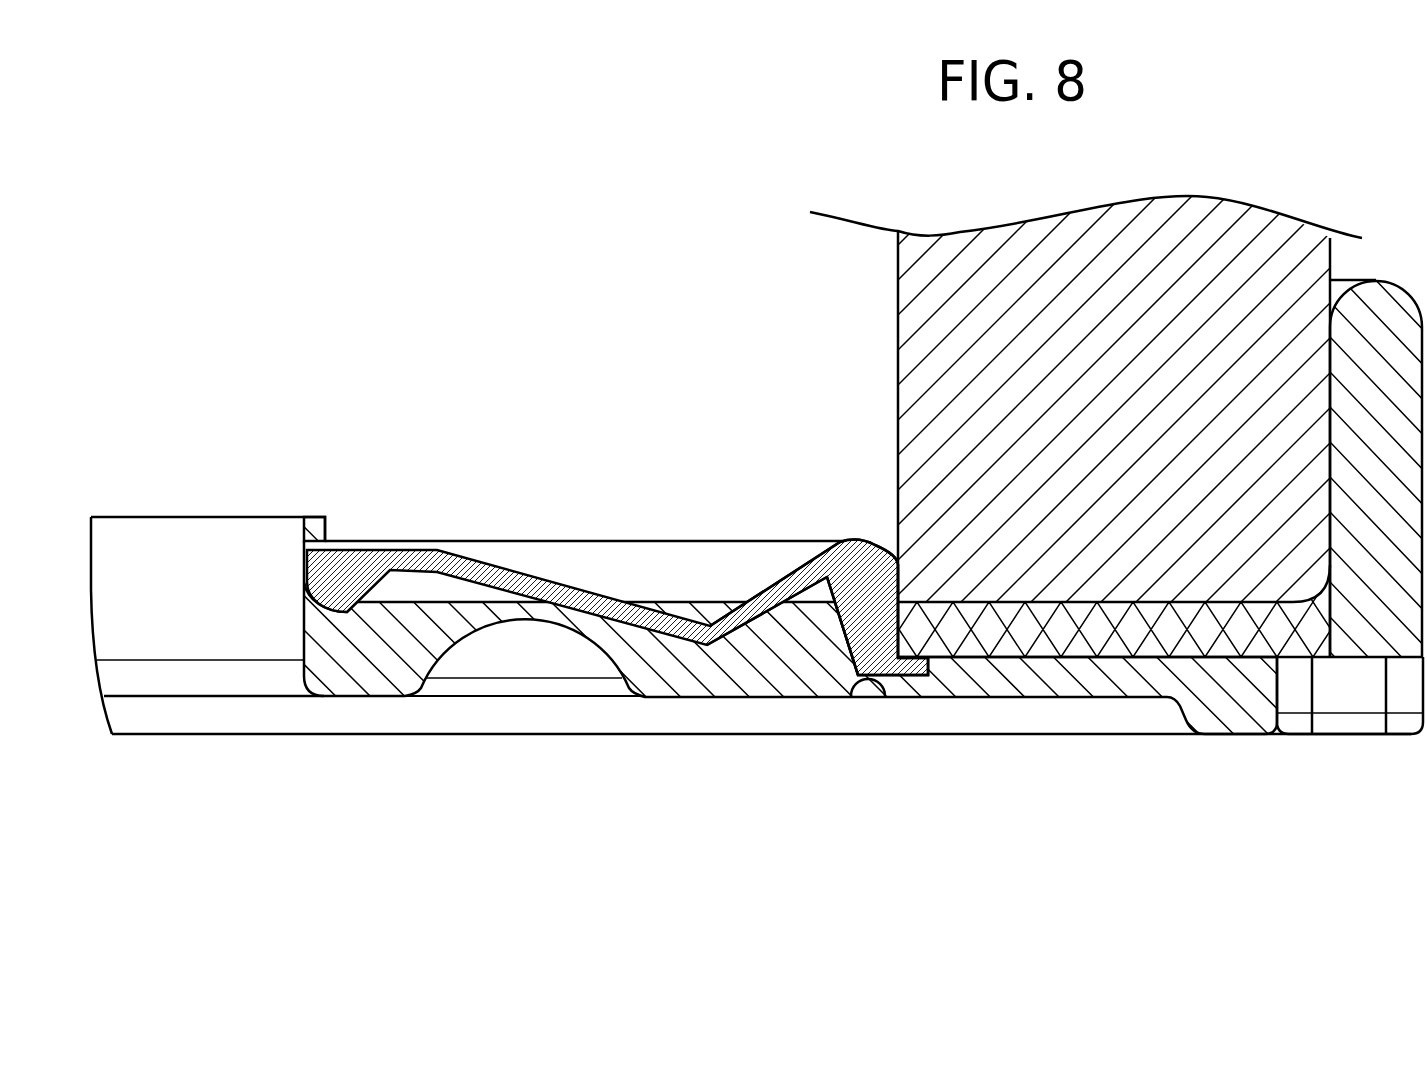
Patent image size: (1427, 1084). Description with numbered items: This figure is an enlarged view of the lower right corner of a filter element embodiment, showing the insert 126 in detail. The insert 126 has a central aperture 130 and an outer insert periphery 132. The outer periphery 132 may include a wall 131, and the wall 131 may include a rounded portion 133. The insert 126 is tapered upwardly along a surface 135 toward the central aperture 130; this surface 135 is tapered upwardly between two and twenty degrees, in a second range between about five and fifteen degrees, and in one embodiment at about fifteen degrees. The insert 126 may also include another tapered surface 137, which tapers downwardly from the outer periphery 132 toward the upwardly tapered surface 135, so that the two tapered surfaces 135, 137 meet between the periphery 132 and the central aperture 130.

The insert 126 is at (678, 538).
The central aperture 130 is at (303, 560).
The wall 131 is at (853, 540).
The outer insert periphery 132 is at (901, 615).
The rounded portion 133 is at (928, 527).
The tapered surface 135 is at (617, 547).
The tapered surface 137 is at (780, 587).